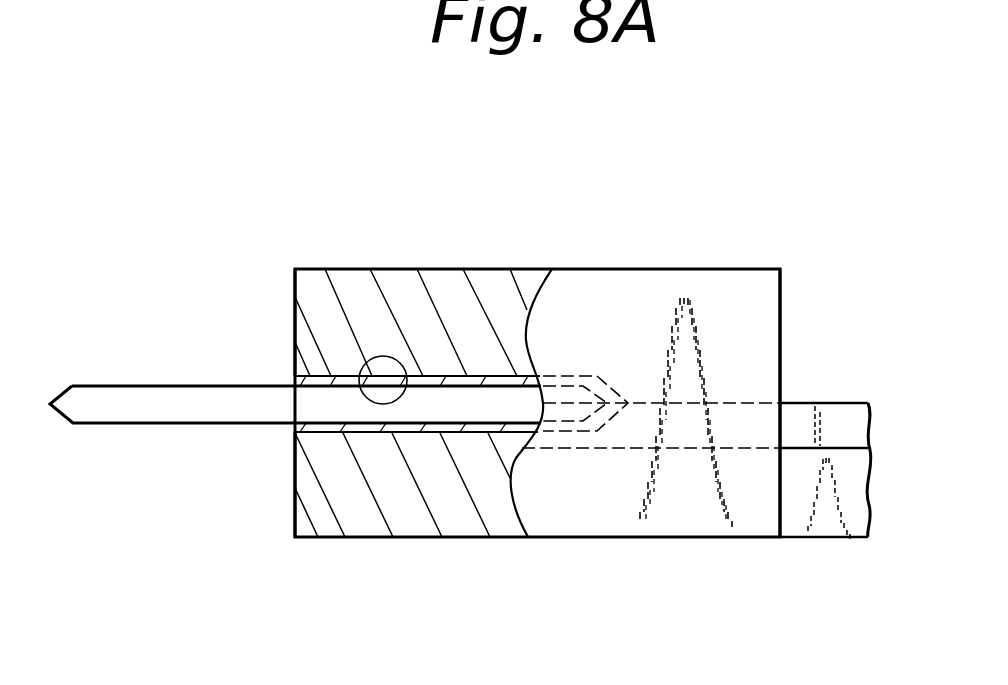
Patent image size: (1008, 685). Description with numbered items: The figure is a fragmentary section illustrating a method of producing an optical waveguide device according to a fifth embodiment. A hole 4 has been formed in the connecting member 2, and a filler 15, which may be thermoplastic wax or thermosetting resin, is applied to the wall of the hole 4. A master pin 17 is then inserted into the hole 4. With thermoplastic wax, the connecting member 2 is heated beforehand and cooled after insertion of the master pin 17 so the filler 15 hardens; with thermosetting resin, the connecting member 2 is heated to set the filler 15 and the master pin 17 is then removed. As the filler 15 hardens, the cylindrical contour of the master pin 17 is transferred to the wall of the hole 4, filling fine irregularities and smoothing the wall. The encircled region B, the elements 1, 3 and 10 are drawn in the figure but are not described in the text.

The optical fiber 1 is at (820, 403).
The connecting member 2 is at (640, 297).
The lower holding member 3 is at (295, 498).
The hole 4 is at (293, 383).
The end face of ferrule 10 is at (782, 318).
The filler 15 is at (455, 377).
The master pin 17 is at (200, 398).
The enlarged portion B is at (375, 357).